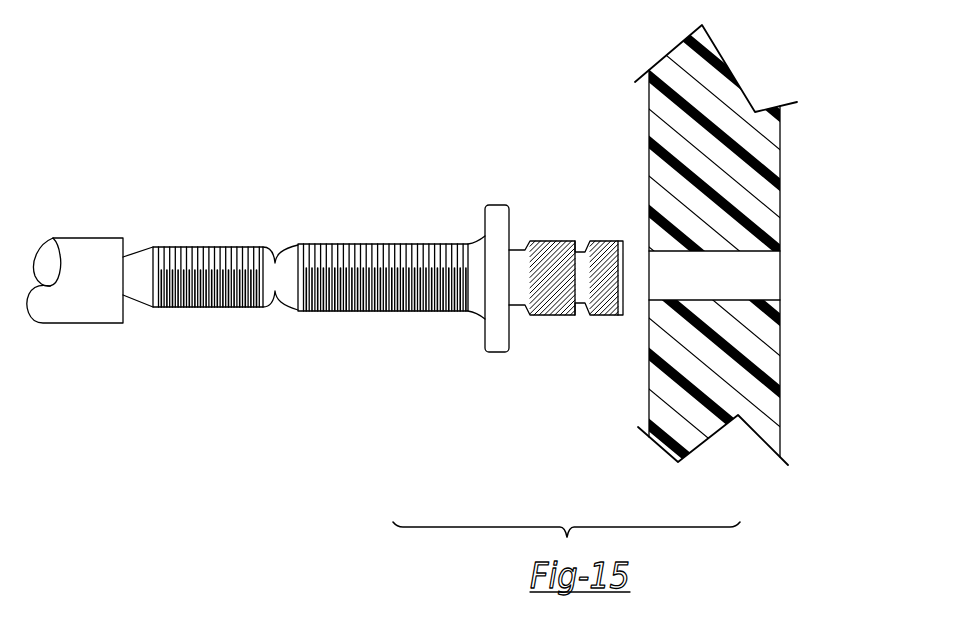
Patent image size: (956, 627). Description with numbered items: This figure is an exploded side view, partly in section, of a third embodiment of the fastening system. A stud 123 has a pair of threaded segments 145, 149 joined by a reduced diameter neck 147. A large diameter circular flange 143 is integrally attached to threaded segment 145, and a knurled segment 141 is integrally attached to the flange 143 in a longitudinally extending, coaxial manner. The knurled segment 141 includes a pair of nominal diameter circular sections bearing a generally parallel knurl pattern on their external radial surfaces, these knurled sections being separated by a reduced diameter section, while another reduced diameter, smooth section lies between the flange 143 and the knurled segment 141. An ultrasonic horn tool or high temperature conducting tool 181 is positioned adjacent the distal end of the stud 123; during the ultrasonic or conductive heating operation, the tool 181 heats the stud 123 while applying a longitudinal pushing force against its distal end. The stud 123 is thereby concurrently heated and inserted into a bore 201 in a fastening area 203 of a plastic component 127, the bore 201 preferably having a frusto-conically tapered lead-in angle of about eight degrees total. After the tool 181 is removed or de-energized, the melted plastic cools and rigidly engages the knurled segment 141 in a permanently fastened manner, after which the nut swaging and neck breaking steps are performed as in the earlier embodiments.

The stud 123 is at (320, 167).
The ultrasonic horn tool or high temperature conducting tool 181 is at (90, 255).
The threaded segment 149 is at (198, 268).
The reduced diameter neck 147 is at (272, 285).
The threaded segment 145 is at (397, 273).
The large diameter circular flange 143 is at (500, 212).
The knurled segment 141 is at (553, 255).
The plastic component 127 is at (808, 118).
The fastening area 203 is at (775, 162).
The bore 201 is at (762, 262).